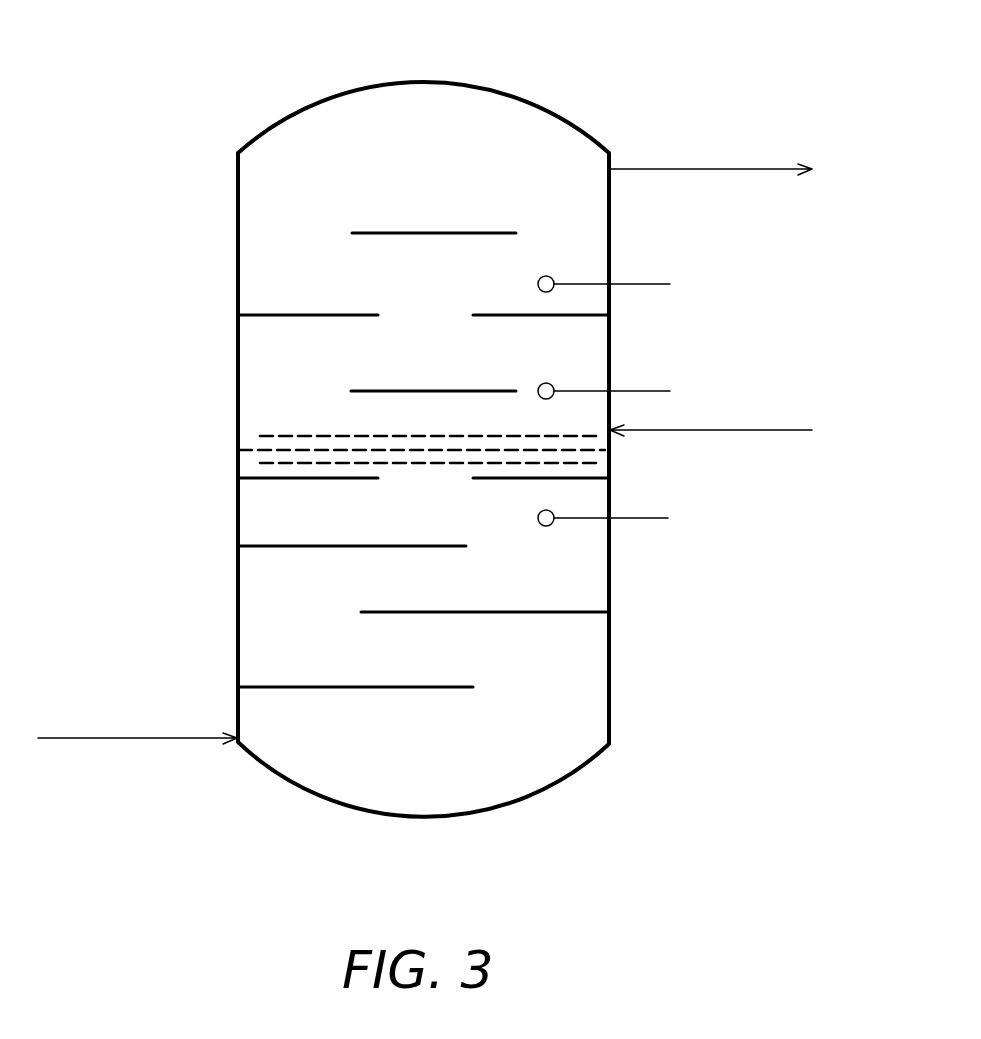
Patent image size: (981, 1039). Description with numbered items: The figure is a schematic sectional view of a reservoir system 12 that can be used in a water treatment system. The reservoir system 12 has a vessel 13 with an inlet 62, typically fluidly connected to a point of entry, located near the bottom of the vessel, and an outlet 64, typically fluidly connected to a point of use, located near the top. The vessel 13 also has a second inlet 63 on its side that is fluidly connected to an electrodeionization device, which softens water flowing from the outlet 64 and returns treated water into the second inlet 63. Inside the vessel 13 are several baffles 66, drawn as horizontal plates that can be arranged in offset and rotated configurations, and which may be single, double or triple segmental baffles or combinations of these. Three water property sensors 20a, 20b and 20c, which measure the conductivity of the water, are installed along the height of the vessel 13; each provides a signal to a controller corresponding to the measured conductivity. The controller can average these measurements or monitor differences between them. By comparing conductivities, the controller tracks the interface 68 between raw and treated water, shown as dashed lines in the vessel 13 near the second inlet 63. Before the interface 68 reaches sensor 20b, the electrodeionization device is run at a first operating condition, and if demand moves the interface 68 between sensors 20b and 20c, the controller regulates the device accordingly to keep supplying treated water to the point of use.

The reservoir system 12 is at (247, 46).
The vessel 13 is at (237, 232).
The sensor 20a is at (551, 525).
The sensor 20b is at (552, 384).
The sensor 20c is at (552, 277).
The inlet 62 is at (236, 744).
The second inlet 63 is at (612, 429).
The outlet 64 is at (612, 166).
The baffle 66 is at (500, 610).
The interface 68 is at (580, 452).